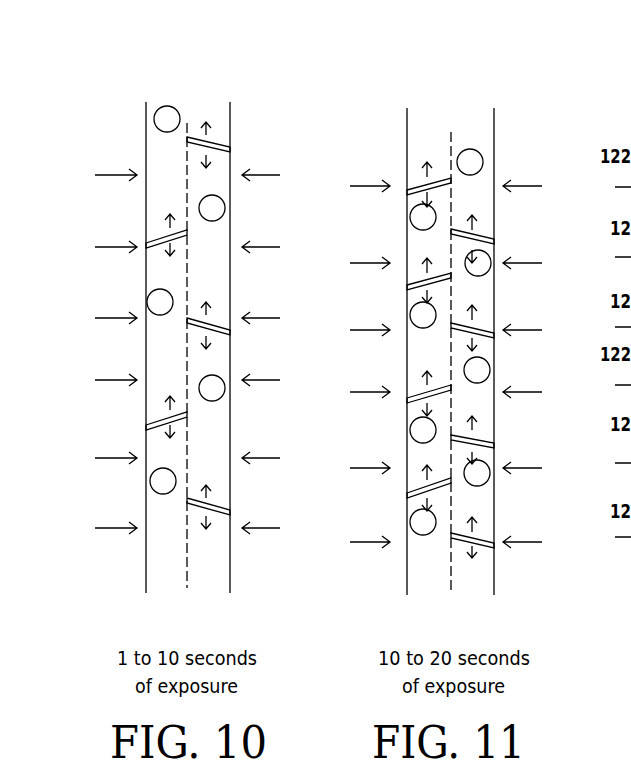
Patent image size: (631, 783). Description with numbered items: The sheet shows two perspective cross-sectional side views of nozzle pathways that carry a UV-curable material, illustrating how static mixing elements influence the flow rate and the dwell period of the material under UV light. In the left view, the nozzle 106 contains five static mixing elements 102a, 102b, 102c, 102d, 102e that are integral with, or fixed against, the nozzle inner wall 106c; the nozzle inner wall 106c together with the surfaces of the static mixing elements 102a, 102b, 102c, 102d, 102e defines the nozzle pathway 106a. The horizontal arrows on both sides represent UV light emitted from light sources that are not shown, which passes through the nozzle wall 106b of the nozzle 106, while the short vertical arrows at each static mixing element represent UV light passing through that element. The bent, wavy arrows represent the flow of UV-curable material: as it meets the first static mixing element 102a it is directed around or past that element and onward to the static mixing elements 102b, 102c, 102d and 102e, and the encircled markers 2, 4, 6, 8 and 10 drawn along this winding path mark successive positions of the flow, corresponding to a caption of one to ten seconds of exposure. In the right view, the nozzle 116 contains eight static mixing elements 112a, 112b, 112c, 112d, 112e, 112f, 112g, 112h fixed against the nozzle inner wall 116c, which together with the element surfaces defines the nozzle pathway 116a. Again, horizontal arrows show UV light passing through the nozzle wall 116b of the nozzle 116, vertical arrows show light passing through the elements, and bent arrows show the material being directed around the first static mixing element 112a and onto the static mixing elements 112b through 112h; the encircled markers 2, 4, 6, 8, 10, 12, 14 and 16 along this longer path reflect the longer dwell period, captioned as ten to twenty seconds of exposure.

In FIG. 10, the nozzle 106 is at (134, 136).
In FIG. 10, the nozzle pathway 106a is at (218, 586).
In FIG. 10, the nozzle wall 106b is at (146, 272).
In FIG. 10, the nozzle inner wall 106c is at (230, 107).
In FIG. 10, the static mixing element 102a is at (232, 498).
In FIG. 10, the static mixing element 102b is at (146, 423).
In FIG. 10, the static mixing element 102c is at (232, 330).
In FIG. 10, the static mixing element 102d is at (148, 241).
In FIG. 10, the static mixing element 102e is at (232, 144).
In FIG. 11, the nozzle 116 is at (510, 150).
In FIG. 11, the nozzle pathway 116a is at (477, 590).
In FIG. 11, the nozzle wall 116b is at (494, 120).
In FIG. 11, the nozzle inner wall 116c is at (407, 118).
In FIG. 11, the static mixing element 112a is at (496, 534).
In FIG. 11, the static mixing element 112b is at (407, 495).
In FIG. 11, the static mixing element 112c is at (496, 438).
In FIG. 11, the static mixing element 112d is at (407, 401).
In FIG. 11, the static mixing element 112e is at (496, 326).
In FIG. 11, the static mixing element 112f is at (407, 287).
In FIG. 11, the static mixing element 112g is at (496, 234).
In FIG. 11, the static mixing element 112h is at (407, 194).
In FIG. 10, the flow position marker 2 is at (171, 501).
In FIG. 11, the flow position marker 2 is at (433, 542).
In FIG. 10, the flow position marker 4 is at (207, 410).
In FIG. 11, the flow position marker 4 is at (476, 495).
In FIG. 10, the flow position marker 6 is at (170, 322).
In FIG. 11, the flow position marker 6 is at (433, 449).
In FIG. 10, the flow position marker 8 is at (207, 230).
In FIG. 11, the flow position marker 8 is at (477, 392).
In FIG. 10, the flow position marker 10 is at (171, 139).
In FIG. 11, the flow position marker 10 is at (433, 335).
In FIG. 11, the flow position marker 12 is at (476, 285).
In FIG. 11, the flow position marker 14 is at (434, 237).
In FIG. 11, the flow position marker 16 is at (469, 183).